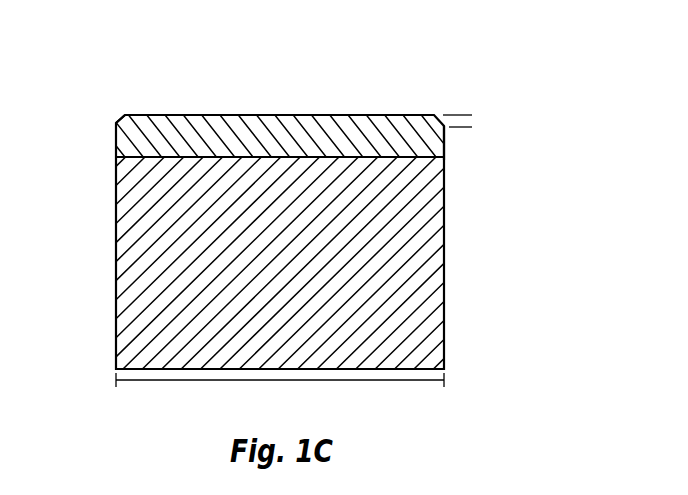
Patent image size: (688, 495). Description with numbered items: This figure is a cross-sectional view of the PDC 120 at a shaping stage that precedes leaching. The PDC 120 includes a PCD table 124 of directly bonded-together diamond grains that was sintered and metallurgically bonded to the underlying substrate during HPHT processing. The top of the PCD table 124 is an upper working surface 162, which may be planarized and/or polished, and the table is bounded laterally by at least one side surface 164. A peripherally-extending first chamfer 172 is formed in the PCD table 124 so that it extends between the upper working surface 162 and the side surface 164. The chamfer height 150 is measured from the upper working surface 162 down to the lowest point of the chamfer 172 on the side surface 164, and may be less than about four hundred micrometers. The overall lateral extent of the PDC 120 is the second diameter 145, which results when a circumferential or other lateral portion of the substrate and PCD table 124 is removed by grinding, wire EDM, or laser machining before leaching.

The PDC 120 is at (519, 83).
The upper working surface 162 is at (338, 115).
The side surface 164 is at (116, 150).
The first chamfer 172 is at (120, 121).
The PCD table 124 is at (429, 146).
The chamfer height 150 is at (465, 148).
The second diameter 145 is at (303, 381).